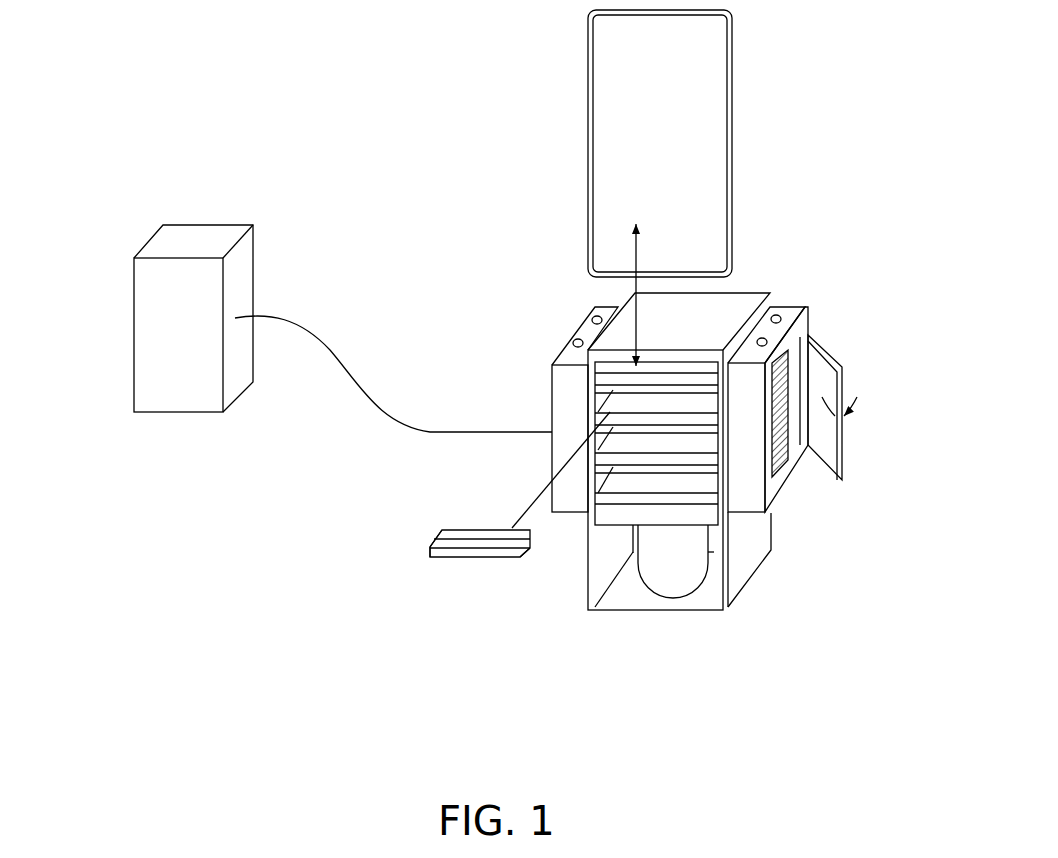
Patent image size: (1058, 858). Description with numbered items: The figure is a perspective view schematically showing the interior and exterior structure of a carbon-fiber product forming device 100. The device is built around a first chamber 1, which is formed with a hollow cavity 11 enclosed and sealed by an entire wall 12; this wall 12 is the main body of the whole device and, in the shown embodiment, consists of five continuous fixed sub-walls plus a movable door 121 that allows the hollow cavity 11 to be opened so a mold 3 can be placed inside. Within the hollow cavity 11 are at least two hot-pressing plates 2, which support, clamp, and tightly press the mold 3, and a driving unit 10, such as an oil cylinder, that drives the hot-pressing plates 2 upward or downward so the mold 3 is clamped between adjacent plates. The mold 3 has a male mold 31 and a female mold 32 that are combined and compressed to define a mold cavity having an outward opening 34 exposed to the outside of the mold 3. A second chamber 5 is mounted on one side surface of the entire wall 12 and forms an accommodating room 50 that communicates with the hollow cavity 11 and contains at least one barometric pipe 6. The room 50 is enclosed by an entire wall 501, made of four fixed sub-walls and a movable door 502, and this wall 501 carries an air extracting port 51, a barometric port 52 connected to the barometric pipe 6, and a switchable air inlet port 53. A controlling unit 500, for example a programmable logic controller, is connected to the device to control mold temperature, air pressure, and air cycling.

The carbon-fiber product forming device 100 is at (392, 97).
The movable door 121 is at (687, 215).
The first chamber 1 is at (720, 325).
The hot-pressing plates 2 is at (637, 397).
The mold 3 is at (480, 535).
The male mold 31 is at (430, 547).
The female mold 32 is at (430, 557).
The outward opening 34 is at (522, 547).
The second chamber 5 is at (580, 412).
The air extracting port 51 is at (781, 316).
The barometric port 52 is at (573, 340).
The switchable air inlet port 53 is at (592, 316).
The driving unit 10 is at (672, 578).
The hollow cavity 11 is at (630, 578).
The entire wall 12 is at (740, 560).
The accommodating room 50 is at (790, 447).
The entire wall 501 is at (752, 487).
The movable door 502 is at (838, 383).
The barometric pipe 6 is at (790, 447).
The controlling unit 500 is at (162, 327).